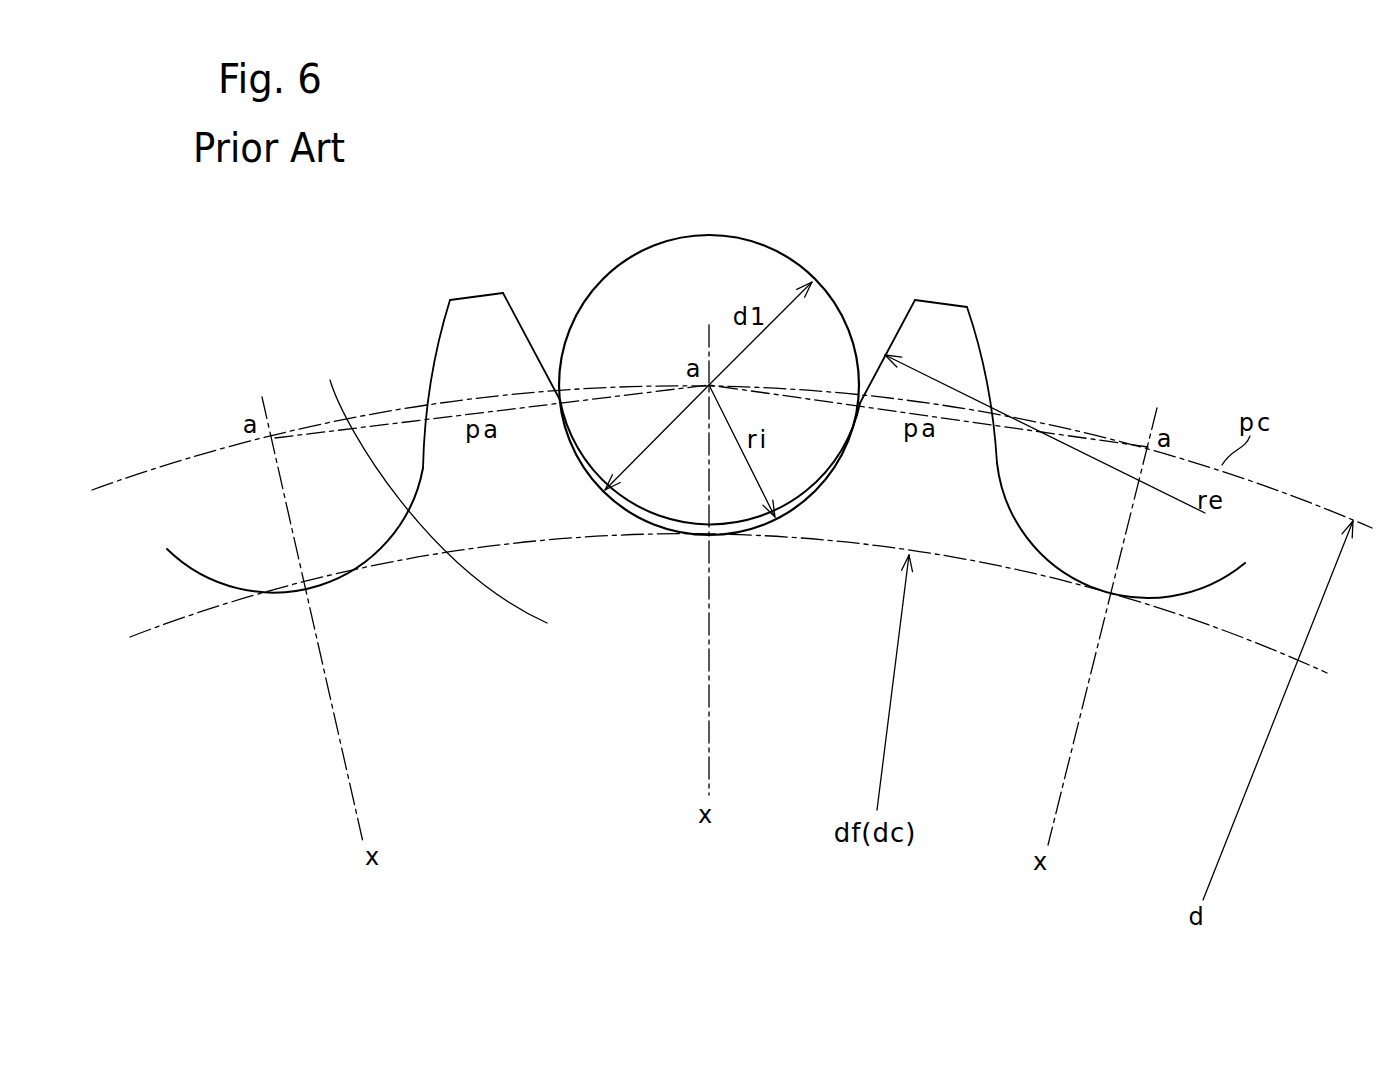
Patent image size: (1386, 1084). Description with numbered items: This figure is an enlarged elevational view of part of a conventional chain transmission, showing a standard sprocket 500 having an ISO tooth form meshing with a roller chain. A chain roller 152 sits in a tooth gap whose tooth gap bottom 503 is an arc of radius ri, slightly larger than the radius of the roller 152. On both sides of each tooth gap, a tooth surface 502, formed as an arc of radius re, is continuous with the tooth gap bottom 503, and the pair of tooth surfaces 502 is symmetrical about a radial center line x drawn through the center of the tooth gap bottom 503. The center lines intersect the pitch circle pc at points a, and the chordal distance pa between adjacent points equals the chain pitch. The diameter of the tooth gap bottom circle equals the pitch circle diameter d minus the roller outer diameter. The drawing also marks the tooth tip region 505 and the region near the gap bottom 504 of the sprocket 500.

The roller 152 is at (666, 236).
The standard sprocket 500 is at (425, 488).
The tooth surface 502 is at (437, 336).
The tooth gap bottom 503 is at (231, 584).
The tooth bottom 504 is at (332, 548).
The tooth tip 505 is at (480, 299).